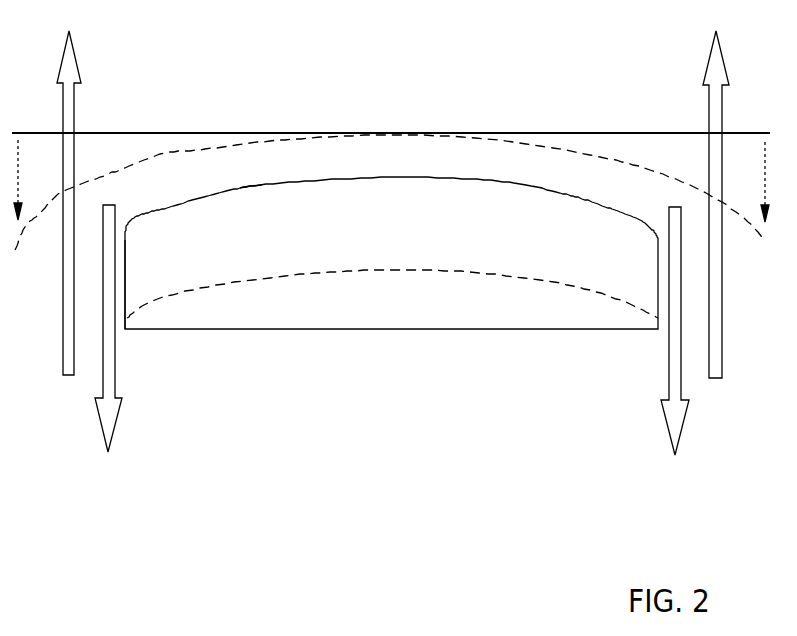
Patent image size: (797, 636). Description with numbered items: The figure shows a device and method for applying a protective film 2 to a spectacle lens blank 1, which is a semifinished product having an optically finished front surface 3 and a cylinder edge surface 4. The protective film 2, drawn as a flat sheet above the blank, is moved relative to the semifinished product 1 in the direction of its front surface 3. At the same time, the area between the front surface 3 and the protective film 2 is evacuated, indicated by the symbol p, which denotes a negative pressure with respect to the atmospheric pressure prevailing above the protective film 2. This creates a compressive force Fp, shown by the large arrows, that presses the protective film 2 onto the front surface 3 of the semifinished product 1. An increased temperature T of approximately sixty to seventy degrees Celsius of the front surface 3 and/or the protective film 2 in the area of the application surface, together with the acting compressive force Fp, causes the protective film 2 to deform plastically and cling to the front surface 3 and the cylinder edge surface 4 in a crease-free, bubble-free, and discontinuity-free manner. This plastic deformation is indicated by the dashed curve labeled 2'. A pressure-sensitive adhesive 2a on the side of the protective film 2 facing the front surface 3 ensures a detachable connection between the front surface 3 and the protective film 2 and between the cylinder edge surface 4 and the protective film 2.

The spectacle lens blank 1 is at (337, 232).
The protective film 2 is at (391, 103).
The plastic deformation of the protective film 2' is at (390, 162).
The pressure-sensitive adhesive 2a is at (530, 262).
The front surface 3 is at (323, 180).
The cylinder edge surface 4 is at (125, 278).
The increased temperature T is at (255, 186).
The compressive force Fp is at (393, 197).
The pressure p is at (392, 338).